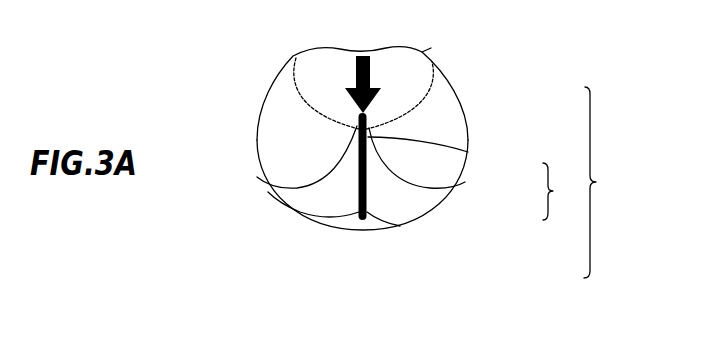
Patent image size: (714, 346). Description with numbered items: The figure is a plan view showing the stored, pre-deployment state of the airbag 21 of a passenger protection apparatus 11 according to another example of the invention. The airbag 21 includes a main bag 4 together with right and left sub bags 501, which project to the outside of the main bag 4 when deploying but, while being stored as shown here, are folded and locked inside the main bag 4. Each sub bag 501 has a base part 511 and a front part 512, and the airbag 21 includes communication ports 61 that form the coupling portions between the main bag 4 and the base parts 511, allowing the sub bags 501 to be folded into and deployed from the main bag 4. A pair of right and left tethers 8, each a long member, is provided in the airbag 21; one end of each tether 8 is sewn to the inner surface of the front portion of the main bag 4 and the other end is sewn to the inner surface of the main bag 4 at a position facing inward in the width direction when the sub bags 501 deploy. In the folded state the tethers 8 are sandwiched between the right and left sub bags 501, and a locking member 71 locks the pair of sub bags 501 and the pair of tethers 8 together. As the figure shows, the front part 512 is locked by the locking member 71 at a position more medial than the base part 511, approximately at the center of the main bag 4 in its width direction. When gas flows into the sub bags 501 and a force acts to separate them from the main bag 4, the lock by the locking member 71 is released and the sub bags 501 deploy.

The passenger protection apparatus 11 is at (236, 80).
The main bag 4 is at (441, 74).
The communication port 61 is at (428, 220).
The tether 8 is at (300, 105).
The locking member 71 is at (357, 184).
The front part 512 is at (468, 152).
The base part 511 is at (465, 182).
The sub bag 501 is at (564, 191).
The airbag 21 is at (603, 182).